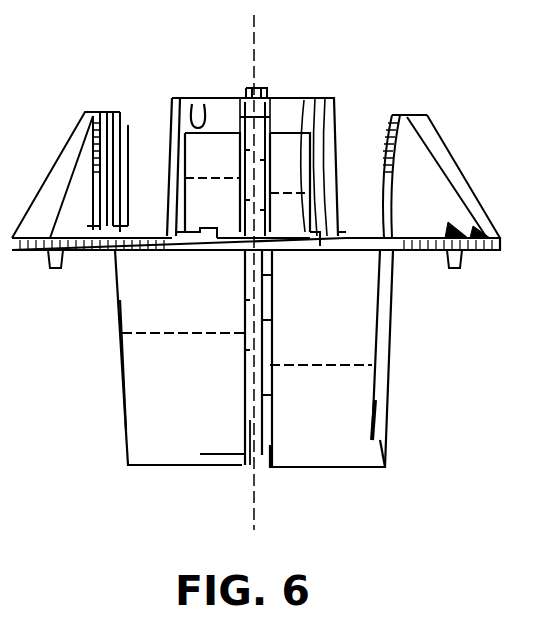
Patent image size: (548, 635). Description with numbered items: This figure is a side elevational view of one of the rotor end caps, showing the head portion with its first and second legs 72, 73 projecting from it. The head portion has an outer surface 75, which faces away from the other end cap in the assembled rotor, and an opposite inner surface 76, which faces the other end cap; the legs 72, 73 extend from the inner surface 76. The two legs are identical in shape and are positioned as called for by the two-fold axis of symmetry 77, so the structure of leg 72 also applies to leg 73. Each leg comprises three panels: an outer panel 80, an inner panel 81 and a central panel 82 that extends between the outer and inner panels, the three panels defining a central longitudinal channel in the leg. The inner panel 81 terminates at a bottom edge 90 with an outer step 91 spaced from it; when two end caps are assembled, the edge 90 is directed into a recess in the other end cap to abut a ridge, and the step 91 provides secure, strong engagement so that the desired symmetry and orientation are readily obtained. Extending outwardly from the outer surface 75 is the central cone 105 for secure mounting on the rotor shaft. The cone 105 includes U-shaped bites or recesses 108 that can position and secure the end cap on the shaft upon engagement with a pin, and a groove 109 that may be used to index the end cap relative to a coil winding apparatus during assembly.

The first leg 72 is at (388, 392).
The second leg 73 is at (122, 381).
The outer surface 75 is at (148, 236).
The inner surface 76 is at (152, 252).
The axis of symmetry 77 is at (258, 60).
The outer panel 80 is at (386, 452).
The inner panel 81 is at (250, 410).
The central panel 82 is at (335, 446).
The bottom edge 90 is at (165, 490).
The outer step 91 is at (245, 462).
The central cone 105 is at (172, 112).
The U-shaped bites or recesses 108 is at (198, 104).
The groove 109 is at (258, 178).